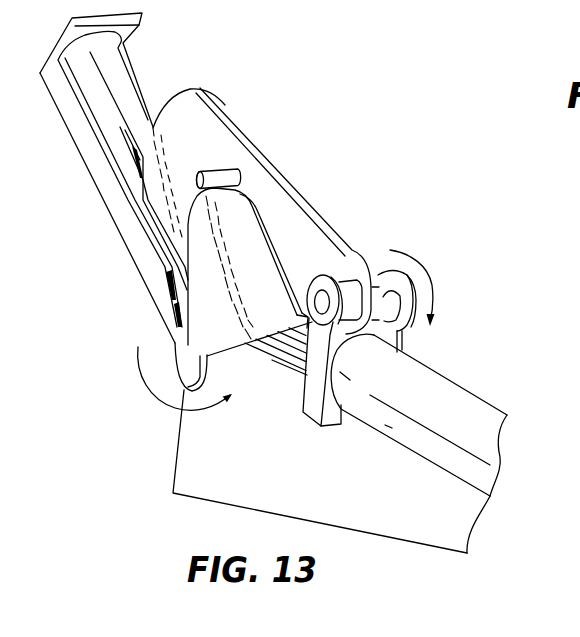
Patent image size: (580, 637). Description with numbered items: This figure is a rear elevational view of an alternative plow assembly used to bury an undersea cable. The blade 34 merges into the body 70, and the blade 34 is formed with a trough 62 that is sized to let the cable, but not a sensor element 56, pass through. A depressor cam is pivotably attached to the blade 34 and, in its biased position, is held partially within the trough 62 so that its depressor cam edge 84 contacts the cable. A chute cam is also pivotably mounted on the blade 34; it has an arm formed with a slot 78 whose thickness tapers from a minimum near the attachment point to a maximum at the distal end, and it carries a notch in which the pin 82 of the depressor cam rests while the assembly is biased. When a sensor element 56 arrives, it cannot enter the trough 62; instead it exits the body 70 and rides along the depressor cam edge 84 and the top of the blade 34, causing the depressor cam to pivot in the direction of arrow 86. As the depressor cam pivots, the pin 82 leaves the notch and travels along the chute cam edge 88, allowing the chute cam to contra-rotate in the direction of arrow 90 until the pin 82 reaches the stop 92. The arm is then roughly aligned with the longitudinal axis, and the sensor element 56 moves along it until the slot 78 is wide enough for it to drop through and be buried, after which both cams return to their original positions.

The slot 78 is at (117, 170).
The pin 82 is at (222, 170).
The chute cam edge 88 is at (245, 189).
The depressor cam edge 84 is at (307, 205).
The stop 92 is at (369, 276).
The arrow 86 is at (431, 270).
The body 70 is at (430, 410).
The arrow 90 is at (170, 403).
The sensor element 56 is at (277, 346).
The blade 34 is at (326, 484).
The trough 62 is at (575, 9).